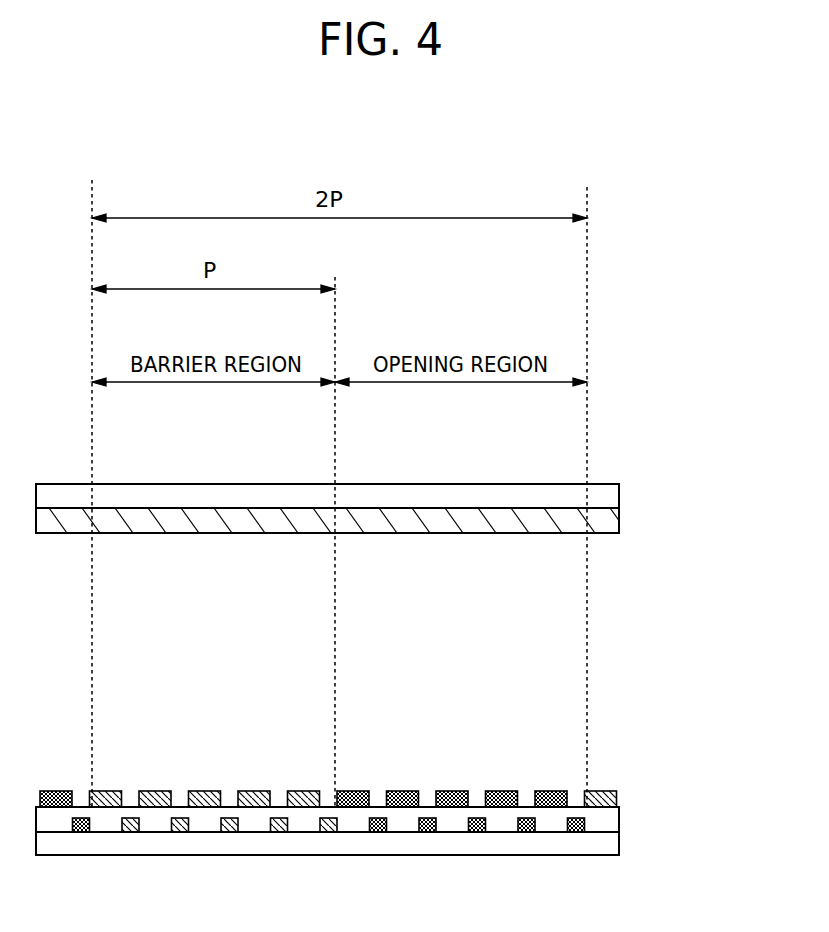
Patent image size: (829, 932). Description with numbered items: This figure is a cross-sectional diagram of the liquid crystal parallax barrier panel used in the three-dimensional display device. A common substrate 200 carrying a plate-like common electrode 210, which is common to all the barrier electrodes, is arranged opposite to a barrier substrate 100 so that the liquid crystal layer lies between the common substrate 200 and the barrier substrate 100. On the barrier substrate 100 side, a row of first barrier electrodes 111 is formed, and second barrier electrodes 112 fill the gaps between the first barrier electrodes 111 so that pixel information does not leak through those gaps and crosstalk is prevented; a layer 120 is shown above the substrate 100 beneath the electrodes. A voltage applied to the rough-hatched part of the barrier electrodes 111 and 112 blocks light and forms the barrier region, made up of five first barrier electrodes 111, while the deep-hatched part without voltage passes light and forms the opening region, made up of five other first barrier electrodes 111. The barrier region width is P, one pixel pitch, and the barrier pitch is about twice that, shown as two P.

The barrier substrate 100 is at (588, 847).
The insulating layer 120 is at (607, 820).
The first barrier electrodes 111 is at (203, 807).
The second barrier electrodes 112 is at (127, 832).
The common substrate 200 is at (610, 496).
The common electrode 210 is at (608, 521).